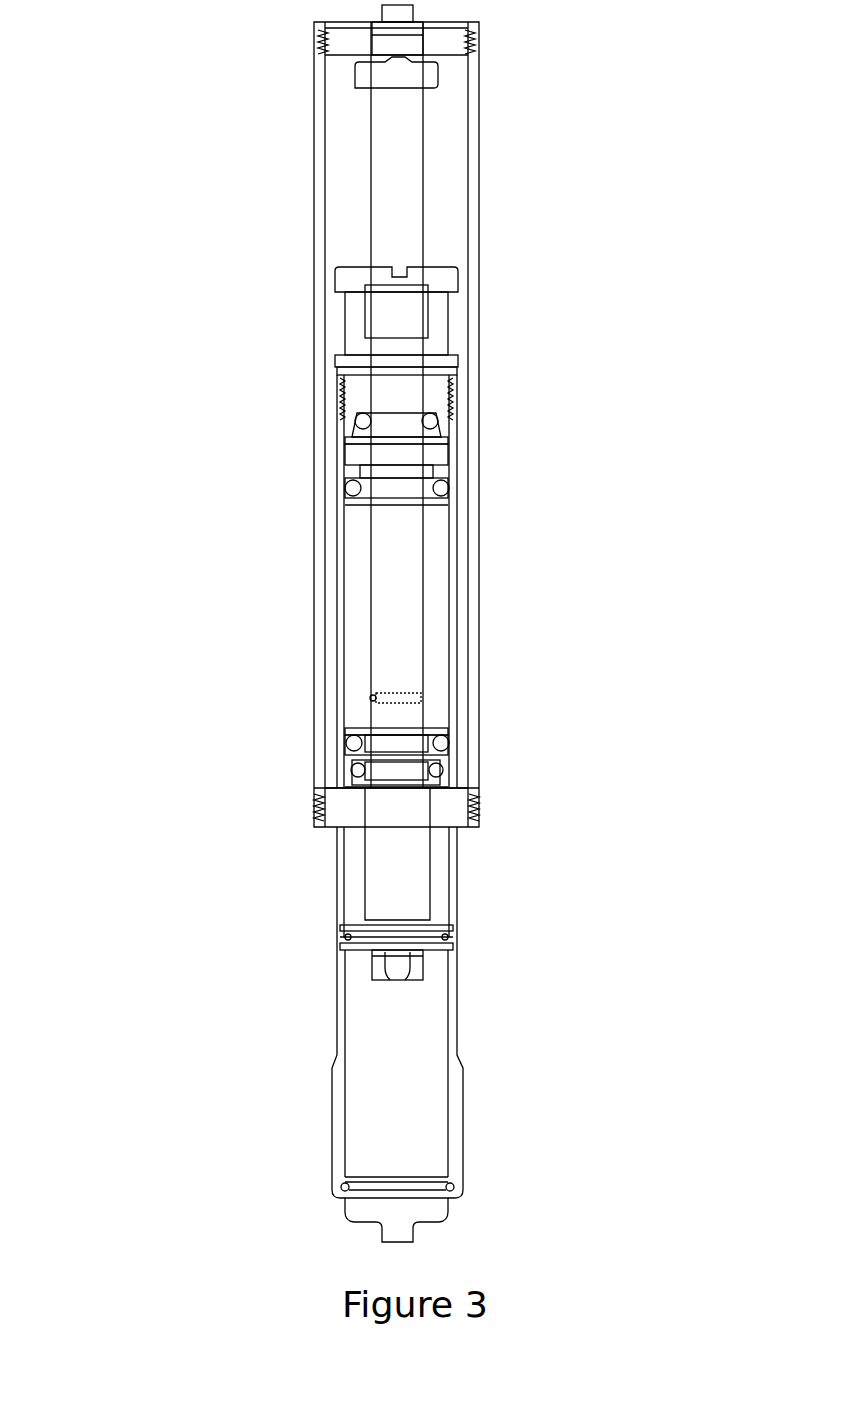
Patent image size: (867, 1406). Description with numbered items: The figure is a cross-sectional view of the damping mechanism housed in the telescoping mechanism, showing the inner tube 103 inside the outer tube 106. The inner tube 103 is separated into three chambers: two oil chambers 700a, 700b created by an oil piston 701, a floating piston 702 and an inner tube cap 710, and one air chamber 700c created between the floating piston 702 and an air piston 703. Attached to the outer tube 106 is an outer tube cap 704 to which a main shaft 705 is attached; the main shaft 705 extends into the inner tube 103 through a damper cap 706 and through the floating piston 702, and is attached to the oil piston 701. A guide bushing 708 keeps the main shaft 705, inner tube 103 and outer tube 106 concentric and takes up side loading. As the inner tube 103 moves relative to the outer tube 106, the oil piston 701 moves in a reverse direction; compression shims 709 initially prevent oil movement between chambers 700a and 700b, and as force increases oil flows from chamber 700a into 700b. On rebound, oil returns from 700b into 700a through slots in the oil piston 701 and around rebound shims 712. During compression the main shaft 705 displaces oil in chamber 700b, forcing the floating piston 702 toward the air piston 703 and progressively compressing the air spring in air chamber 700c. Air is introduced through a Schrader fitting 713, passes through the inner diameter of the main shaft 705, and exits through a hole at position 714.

The inner tube 103 is at (468, 1172).
The outer tube 106 is at (312, 566).
The oil chamber 700a is at (397, 1087).
The oil chamber 700b is at (442, 858).
The air chamber 700c is at (440, 647).
The oil piston 701 is at (340, 931).
The floating piston 702 is at (357, 728).
The air piston 703 is at (352, 472).
The outer tube cap 704 is at (448, 25).
The main shaft 705 is at (432, 893).
The damper cap 706 is at (344, 310).
The guide bushing 708 is at (430, 314).
The compression shims 709 is at (355, 921).
The inner tube cap 710 is at (344, 1213).
The rebound shims 712 is at (357, 950).
The Schrader fitting 713 is at (378, 14).
The position of hole in main shaft 714 is at (381, 700).